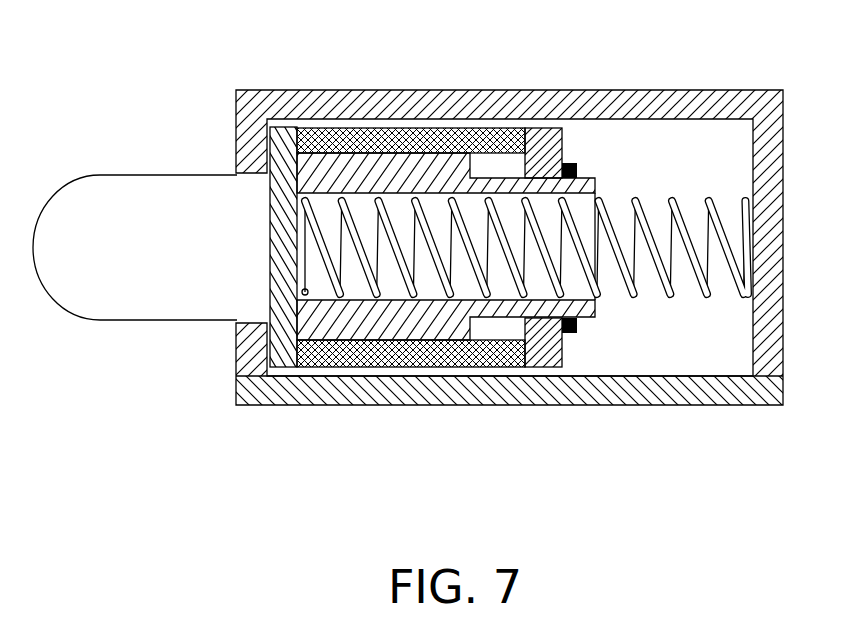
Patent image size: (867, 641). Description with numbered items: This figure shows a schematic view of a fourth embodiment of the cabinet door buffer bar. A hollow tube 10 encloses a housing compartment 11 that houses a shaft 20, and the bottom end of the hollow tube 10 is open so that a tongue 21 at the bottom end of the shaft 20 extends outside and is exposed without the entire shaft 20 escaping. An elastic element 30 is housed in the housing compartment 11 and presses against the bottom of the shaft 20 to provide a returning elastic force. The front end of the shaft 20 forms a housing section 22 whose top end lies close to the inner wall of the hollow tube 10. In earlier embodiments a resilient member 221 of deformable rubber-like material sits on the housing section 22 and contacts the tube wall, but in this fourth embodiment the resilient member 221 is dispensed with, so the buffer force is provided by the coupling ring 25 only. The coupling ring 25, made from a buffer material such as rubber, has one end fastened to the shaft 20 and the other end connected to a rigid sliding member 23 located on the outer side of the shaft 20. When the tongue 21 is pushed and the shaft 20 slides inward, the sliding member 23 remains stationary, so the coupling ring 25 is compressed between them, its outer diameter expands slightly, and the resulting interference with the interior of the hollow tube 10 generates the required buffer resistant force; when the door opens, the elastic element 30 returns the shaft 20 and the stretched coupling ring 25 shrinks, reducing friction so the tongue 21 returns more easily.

The hollow tube 10 is at (308, 92).
The housing compartment 11 is at (672, 150).
The shaft 20 is at (270, 345).
The tongue 21 is at (132, 305).
The housing section 22 is at (453, 150).
The resilient member 221 is at (565, 135).
The sliding member 23 is at (529, 133).
The coupling ring 25 is at (407, 134).
The elastic element 30 is at (672, 298).